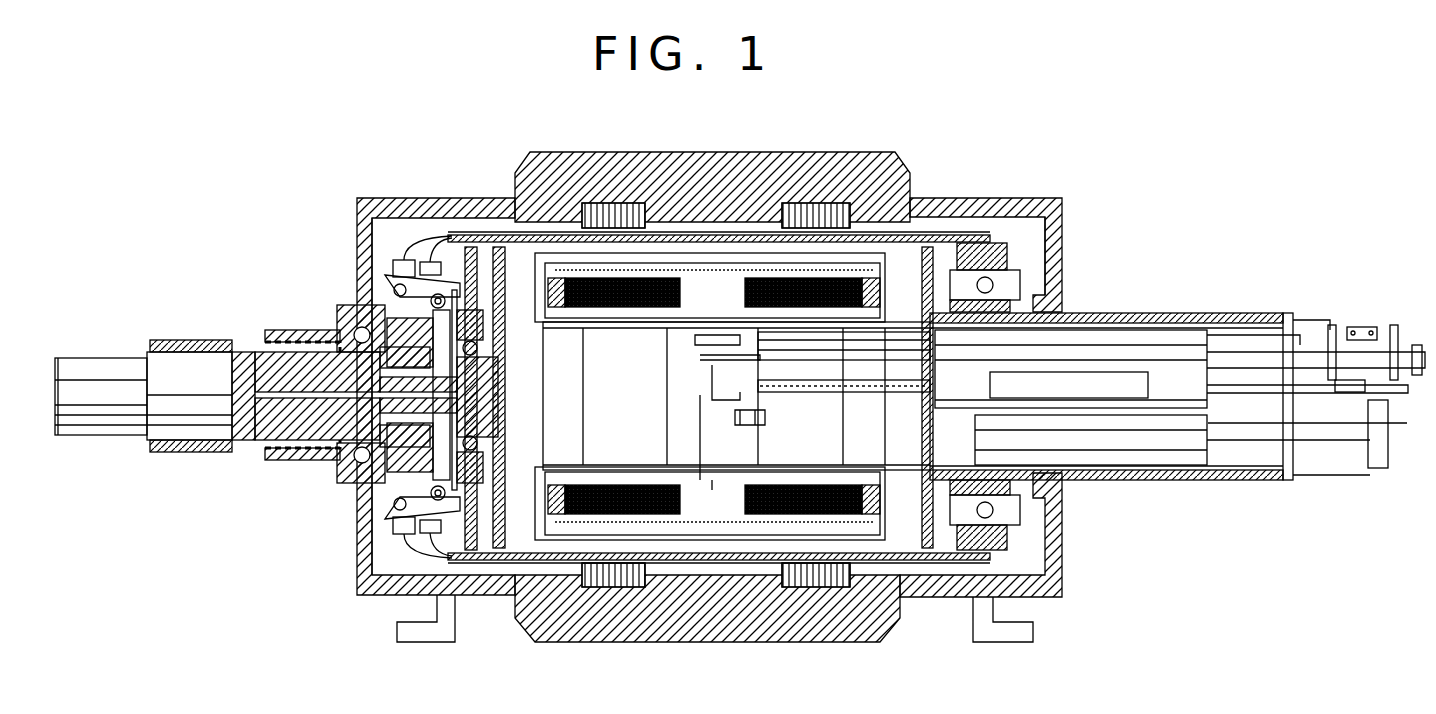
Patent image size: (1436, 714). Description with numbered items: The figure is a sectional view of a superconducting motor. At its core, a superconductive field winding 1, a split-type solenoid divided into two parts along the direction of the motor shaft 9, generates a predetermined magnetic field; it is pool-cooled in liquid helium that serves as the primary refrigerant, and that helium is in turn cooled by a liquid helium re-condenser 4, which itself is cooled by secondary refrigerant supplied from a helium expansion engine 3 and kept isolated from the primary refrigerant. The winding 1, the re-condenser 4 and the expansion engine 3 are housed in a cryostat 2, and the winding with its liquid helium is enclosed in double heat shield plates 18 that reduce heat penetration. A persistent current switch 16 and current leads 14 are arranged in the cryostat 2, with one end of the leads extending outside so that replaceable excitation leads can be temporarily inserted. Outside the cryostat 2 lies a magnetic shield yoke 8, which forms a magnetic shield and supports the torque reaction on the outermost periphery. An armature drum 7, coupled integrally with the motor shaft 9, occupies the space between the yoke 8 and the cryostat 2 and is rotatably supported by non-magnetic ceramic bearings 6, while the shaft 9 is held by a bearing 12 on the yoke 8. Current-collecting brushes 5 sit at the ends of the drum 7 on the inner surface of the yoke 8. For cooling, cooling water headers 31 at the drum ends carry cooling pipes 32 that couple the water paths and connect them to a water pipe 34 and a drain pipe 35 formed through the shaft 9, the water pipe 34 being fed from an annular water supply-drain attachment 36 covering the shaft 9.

The superconductive field winding 1 is at (617, 485).
The cryostat 2 is at (1142, 480).
The helium expansion engine 3 is at (1195, 455).
The liquid helium re-condenser 4 is at (838, 272).
The current-collecting brushes 5 is at (600, 590).
The bearings 6 is at (490, 438).
The armature drum 7 is at (477, 250).
The magnetic shield yoke 8 is at (642, 642).
The motor shaft 9 is at (100, 372).
The bearing 12 is at (335, 450).
The current lead 14 is at (893, 335).
The persistent current switch 16 is at (716, 385).
The double heat shield plates 18 is at (543, 262).
The cooling water headers 31 is at (388, 240).
The cooling pipes 32 is at (407, 262).
The water pipe 34 is at (262, 360).
The drain pipe 35 is at (248, 432).
The annular water supply-drain attachment 36 is at (312, 372).